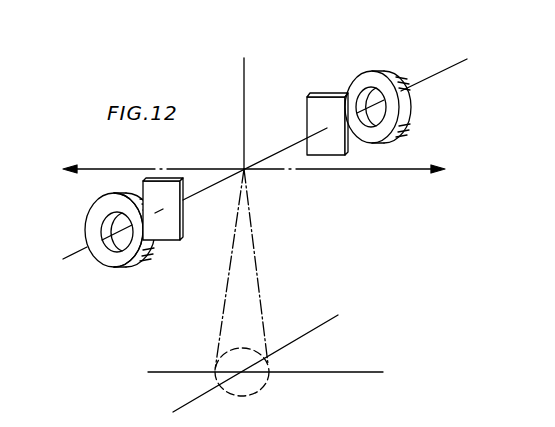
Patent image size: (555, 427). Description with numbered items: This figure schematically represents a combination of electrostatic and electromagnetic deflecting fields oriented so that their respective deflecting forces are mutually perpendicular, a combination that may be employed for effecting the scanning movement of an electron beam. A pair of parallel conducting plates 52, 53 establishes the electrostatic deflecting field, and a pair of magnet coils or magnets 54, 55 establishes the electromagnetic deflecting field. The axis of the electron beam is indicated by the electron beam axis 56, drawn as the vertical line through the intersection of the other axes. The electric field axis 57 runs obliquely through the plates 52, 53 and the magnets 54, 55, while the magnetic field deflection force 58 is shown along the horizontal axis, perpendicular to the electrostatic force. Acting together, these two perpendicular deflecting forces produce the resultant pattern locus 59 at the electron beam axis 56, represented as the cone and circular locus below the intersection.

The parallel conducting plate 52 is at (177, 234).
The parallel conducting plate 53 is at (322, 94).
The magnet coil 54 is at (97, 216).
The magnet coil 55 is at (385, 72).
The electron beam axis 56 is at (244, 70).
The electric field axis 57 is at (467, 59).
The magnetic field deflection force 58 is at (374, 172).
The resultant pattern locus 59 is at (266, 263).